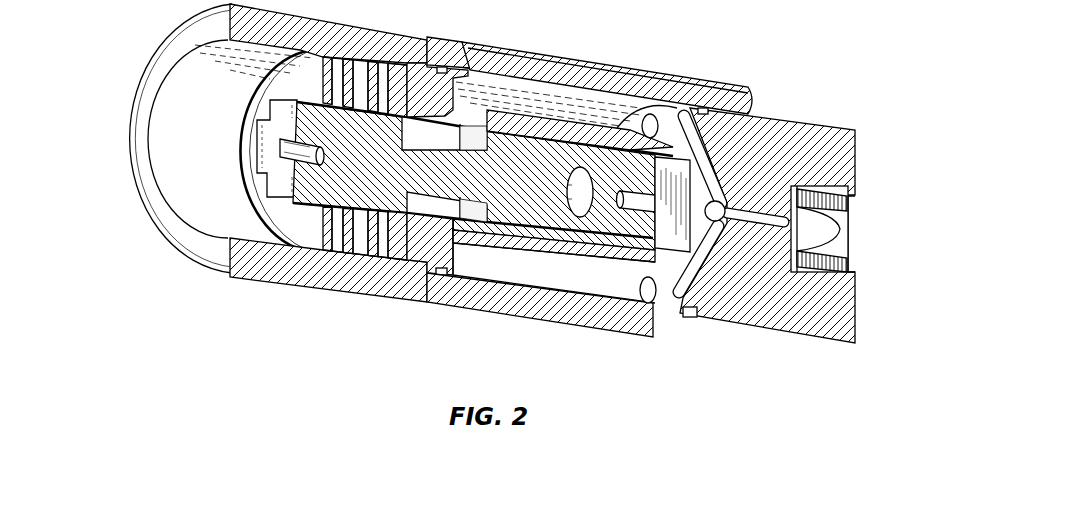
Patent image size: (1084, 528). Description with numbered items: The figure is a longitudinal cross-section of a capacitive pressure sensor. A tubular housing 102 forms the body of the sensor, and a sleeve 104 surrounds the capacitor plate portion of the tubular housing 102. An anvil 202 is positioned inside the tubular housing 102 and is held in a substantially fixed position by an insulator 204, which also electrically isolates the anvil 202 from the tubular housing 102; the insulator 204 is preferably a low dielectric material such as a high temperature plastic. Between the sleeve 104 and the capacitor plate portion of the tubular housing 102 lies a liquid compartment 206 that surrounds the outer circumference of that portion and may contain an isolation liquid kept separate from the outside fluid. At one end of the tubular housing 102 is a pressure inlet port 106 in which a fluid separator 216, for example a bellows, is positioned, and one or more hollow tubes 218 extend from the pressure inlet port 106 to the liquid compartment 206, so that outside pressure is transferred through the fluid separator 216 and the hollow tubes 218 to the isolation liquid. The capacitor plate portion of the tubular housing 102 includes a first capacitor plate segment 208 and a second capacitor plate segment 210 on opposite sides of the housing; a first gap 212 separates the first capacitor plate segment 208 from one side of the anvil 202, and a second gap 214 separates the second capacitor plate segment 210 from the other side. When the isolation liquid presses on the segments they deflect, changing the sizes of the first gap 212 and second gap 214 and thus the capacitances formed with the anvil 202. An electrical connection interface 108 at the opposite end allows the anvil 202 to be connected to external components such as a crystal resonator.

The tubular housing 102 is at (803, 118).
The sleeve 104 is at (650, 70).
The pressure inlet port 106 is at (845, 228).
The electrical connection interface 108 is at (186, 121).
The anvil 202 is at (500, 230).
The insulator 204 is at (302, 237).
The liquid compartment 206 is at (521, 272).
The first capacitor plate segment 208 is at (494, 126).
The second capacitor plate segment 210 is at (578, 252).
The first gap 212 is at (553, 130).
The second gap 214 is at (632, 276).
The fluid separator 216 is at (832, 228).
The hollow tubes 218 is at (700, 165).